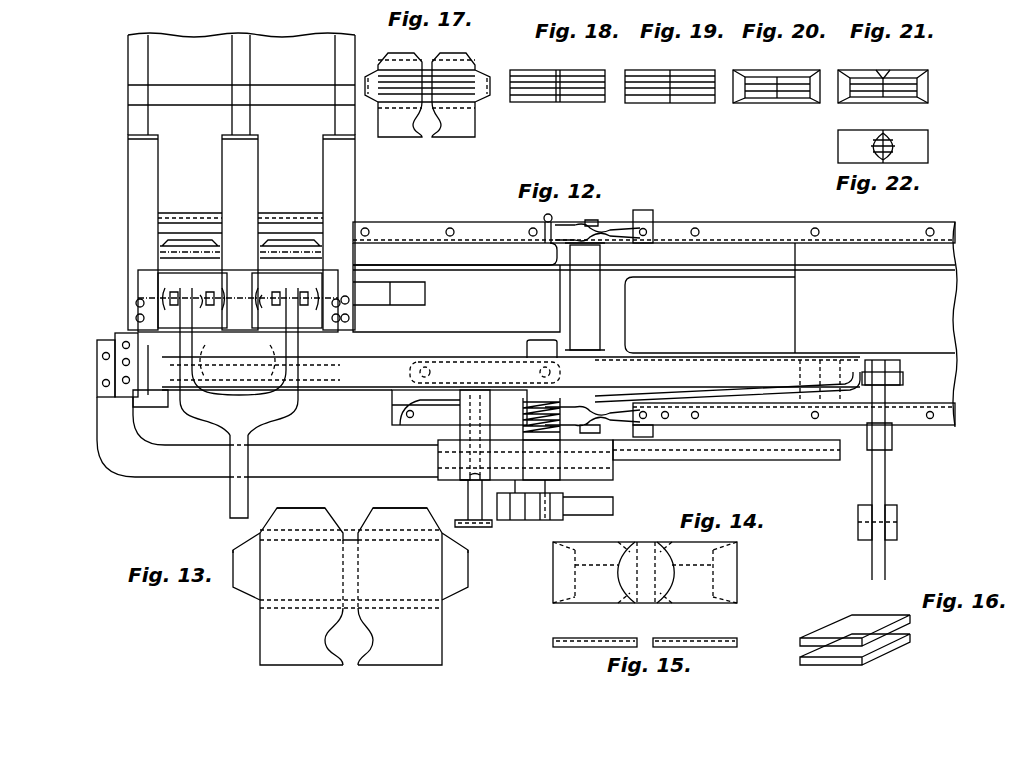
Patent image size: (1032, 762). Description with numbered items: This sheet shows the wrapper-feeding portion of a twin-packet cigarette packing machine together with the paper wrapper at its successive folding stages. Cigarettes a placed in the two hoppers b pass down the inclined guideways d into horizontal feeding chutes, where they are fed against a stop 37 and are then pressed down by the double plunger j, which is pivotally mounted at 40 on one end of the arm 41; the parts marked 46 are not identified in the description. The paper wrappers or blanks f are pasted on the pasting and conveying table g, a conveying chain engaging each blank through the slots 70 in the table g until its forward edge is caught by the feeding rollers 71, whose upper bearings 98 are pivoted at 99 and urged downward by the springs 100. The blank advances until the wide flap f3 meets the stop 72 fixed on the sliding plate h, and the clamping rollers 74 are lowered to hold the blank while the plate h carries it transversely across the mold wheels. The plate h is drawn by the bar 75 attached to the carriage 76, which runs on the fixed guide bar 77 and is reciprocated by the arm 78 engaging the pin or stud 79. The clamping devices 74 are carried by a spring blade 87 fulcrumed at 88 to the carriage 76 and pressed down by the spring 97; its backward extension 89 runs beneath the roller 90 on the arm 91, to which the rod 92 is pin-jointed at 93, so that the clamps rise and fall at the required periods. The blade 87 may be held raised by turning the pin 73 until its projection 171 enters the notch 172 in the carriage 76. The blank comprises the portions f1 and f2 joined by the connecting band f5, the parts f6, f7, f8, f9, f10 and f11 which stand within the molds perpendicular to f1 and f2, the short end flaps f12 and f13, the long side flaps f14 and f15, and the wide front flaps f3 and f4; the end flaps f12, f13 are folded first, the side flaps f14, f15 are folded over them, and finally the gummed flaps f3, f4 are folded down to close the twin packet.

In FIG. 12, the hoppers b is at (188, 38).
In FIG. 12, the guide bars 46 is at (128, 168).
In FIG. 12, the inclined guideways d is at (238, 149).
In FIG. 12, the cigarettes a is at (190, 213).
In FIG. 12, the paper wrapper f is at (222, 255).
In FIG. 17, the paper wrapper f is at (412, 58).
In FIG. 12, the pivot 40 is at (162, 300).
In FIG. 12, the double plunger j is at (233, 299).
In FIG. 12, the stop 37 is at (220, 335).
In FIG. 12, the arm 41 is at (230, 495).
In FIG. 12, the stop 72 is at (118, 350).
In FIG. 12, the clamping rollers 74 is at (148, 352).
In FIG. 12, the bar 75 is at (128, 462).
In FIG. 12, the sliding plate h is at (330, 380).
In FIG. 12, the spring blade 87 is at (375, 393).
In FIG. 12, the slots 70 is at (722, 272).
In FIG. 12, the pasting table g is at (854, 310).
In FIG. 12, the feeding rollers 71 is at (601, 300).
In FIG. 12, the springs 100 is at (544, 216).
In FIG. 12, the upper bearings 98 is at (605, 226).
In FIG. 12, the pivot 99 is at (653, 222).
In FIG. 12, the fulcrum 88 is at (536, 366).
In FIG. 12, the backward extension 89 is at (910, 370).
In FIG. 12, the roller 90 is at (895, 383).
In FIG. 12, the arm 91 is at (886, 460).
In FIG. 12, the rod 92 is at (895, 506).
In FIG. 12, the pin joint 93 is at (895, 520).
In FIG. 12, the notch 172 is at (480, 470).
In FIG. 12, the projection 171 is at (463, 482).
In FIG. 12, the spring 97 is at (562, 438).
In FIG. 12, the carriage 76 is at (438, 464).
In FIG. 12, the fixed guide bar 77 is at (796, 452).
In FIG. 12, the arm 78 is at (613, 506).
In FIG. 12, the pin or stud 79 is at (560, 488).
In FIG. 12, the pin 73 is at (468, 497).
In FIG. 13, the wrapper portion f1 is at (351, 586).
In FIG. 13, the wrapper portion f2 is at (407, 566).
In FIG. 16, the wrapper portion f2 is at (845, 630).
In FIG. 13, the forward wide flap f3 is at (300, 665).
In FIG. 14, the forward wide flap f3 is at (645, 572).
In FIG. 16, the forward wide flap f3 is at (806, 656).
In FIG. 17, the forward wide flap f3 is at (400, 119).
In FIG. 22, the forward wide flap f3 is at (838, 148).
In FIG. 13, the wide front flap f4 is at (398, 665).
In FIG. 14, the wide front flap f4 is at (696, 572).
In FIG. 17, the wide front flap f4 is at (453, 119).
In FIG. 22, the wide front flap f4 is at (928, 147).
In FIG. 13, the connecting band f5 is at (349, 568).
In FIG. 18, the connecting band f5 is at (557, 102).
In FIG. 13, the wrapper part f6 is at (255, 600).
In FIG. 13, the wrapper part f7 is at (443, 602).
In FIG. 13, the wrapper part f8 is at (260, 533).
In FIG. 13, the wrapper part f9 is at (445, 536).
In FIG. 13, the wrapper part f10 is at (306, 608).
In FIG. 15, the wrapper part f10 is at (594, 642).
In FIG. 13, the wrapper part f11 is at (408, 608).
In FIG. 15, the wrapper part f11 is at (706, 642).
In FIG. 16, the wrapper part f11 is at (888, 628).
In FIG. 13, the end flap f12 is at (236, 572).
In FIG. 20, the end flap f12 is at (745, 98).
In FIG. 13, the end flap f13 is at (467, 575).
In FIG. 17, the end flap f13 is at (483, 70).
In FIG. 20, the end flap f13 is at (819, 100).
In FIG. 13, the long side flap f14 is at (304, 512).
In FIG. 13, the long side flap f15 is at (400, 512).